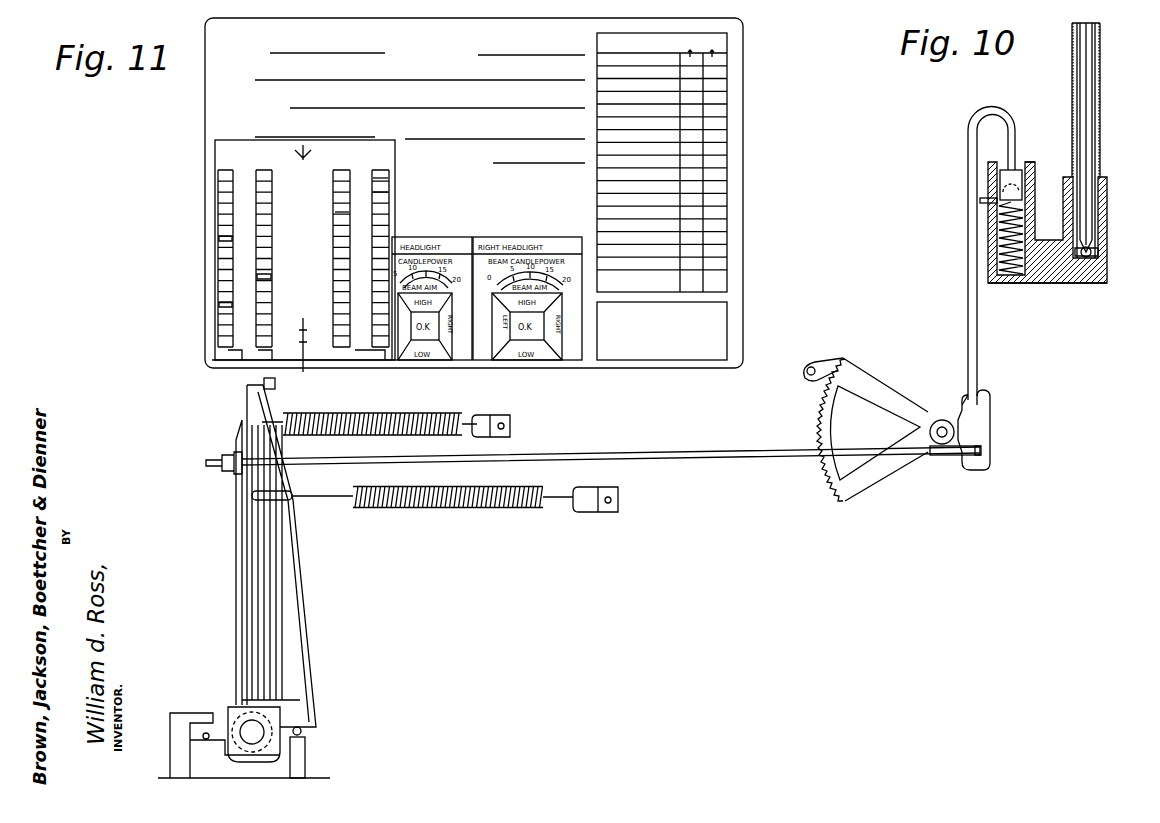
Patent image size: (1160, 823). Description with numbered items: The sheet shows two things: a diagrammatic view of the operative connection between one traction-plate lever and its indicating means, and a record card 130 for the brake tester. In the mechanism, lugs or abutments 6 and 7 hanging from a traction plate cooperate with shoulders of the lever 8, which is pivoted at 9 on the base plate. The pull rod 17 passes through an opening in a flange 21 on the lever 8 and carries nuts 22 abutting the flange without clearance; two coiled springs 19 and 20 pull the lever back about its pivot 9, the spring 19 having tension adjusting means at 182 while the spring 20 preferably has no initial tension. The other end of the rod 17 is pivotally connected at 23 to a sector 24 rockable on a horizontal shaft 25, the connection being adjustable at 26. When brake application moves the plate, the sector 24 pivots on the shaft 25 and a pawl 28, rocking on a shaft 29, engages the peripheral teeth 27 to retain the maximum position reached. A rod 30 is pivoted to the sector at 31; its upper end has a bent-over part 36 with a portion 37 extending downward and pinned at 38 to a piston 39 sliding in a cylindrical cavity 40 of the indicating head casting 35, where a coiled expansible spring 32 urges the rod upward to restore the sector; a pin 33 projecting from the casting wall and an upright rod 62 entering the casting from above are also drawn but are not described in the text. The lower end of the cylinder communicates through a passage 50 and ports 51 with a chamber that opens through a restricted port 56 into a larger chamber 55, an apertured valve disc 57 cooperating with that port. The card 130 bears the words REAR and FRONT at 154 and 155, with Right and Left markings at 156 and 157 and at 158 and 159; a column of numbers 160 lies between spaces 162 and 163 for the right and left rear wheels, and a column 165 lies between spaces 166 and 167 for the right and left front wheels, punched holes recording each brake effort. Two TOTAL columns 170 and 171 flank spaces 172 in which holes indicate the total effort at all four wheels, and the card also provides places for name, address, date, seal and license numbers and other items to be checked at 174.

In FIG. 11, the card 130 is at (477, 137).
In FIG. 11, the REAR marking 154 is at (252, 142).
In FIG. 11, the FRONT marking 155 is at (398, 144).
In FIG. 11, the Right marking 156 is at (218, 152).
In FIG. 11, the Left marking 157 is at (268, 160).
In FIG. 11, the Right marking 158 is at (392, 157).
In FIG. 11, the Left marking 159 is at (357, 153).
In FIG. 11, the column of numbers 160 is at (233, 304).
In FIG. 11, the spaces 162 is at (220, 238).
In FIG. 11, the spaces 163 is at (255, 276).
In FIG. 11, the column of numbers 165 is at (376, 181).
In FIG. 11, the spaces 166 is at (386, 194).
In FIG. 11, the spaces 167 is at (349, 213).
In FIG. 11, the column of numbers 170 is at (301, 150).
In FIG. 11, the column of numbers 171 is at (323, 160).
In FIG. 11, the spaces 172 is at (314, 357).
In FIG. 11, the check items 174 is at (597, 143).
In FIG. 10, the lug 6 is at (198, 722).
In FIG. 10, the lug 7 is at (310, 740).
In FIG. 10, the lever 8 is at (287, 606).
In FIG. 10, the pivot 9 is at (253, 731).
In FIG. 10, the pull rod 17 is at (612, 452).
In FIG. 10, the coiled spring 19 is at (505, 508).
In FIG. 10, the coiled spring 20 is at (407, 412).
In FIG. 10, the flange 21 is at (236, 535).
In FIG. 10, the nuts 22 is at (225, 456).
In FIG. 10, the pivotal connection 23 is at (985, 453).
In FIG. 10, the sector 24 is at (992, 428).
In FIG. 10, the shaft 25 is at (940, 420).
In FIG. 10, the adjustable connection 26 is at (946, 456).
In FIG. 10, the peripheral teeth 27 is at (816, 410).
In FIG. 10, the pawl 28 is at (822, 360).
In FIG. 10, the shaft 29 is at (807, 374).
In FIG. 10, the rod 30 is at (968, 296).
In FIG. 10, the pivot 31 is at (988, 406).
In FIG. 10, the coiled expansible spring 32 is at (992, 229).
In FIG. 10, the stop pin 33 is at (982, 200).
In FIG. 10, the indicating head casting 35 is at (1087, 279).
In FIG. 10, the bent-over part 36 is at (993, 109).
In FIG. 10, the downwardly extending portion 37 is at (1016, 132).
In FIG. 10, the pin fastening 38 is at (1010, 172).
In FIG. 10, the piston 39 is at (1002, 186).
In FIG. 10, the cylindrical cavity 40 is at (1031, 182).
In FIG. 10, the passage 50 is at (1052, 262).
In FIG. 10, the ports 51 is at (1091, 256).
In FIG. 10, the chamber 55 is at (1096, 190).
In FIG. 10, the restricted port 56 is at (1093, 234).
In FIG. 10, the valve disc 57 is at (1099, 252).
In FIG. 10, the rod 62 is at (1091, 63).
In FIG. 10, the tension adjusting means 182 is at (619, 504).